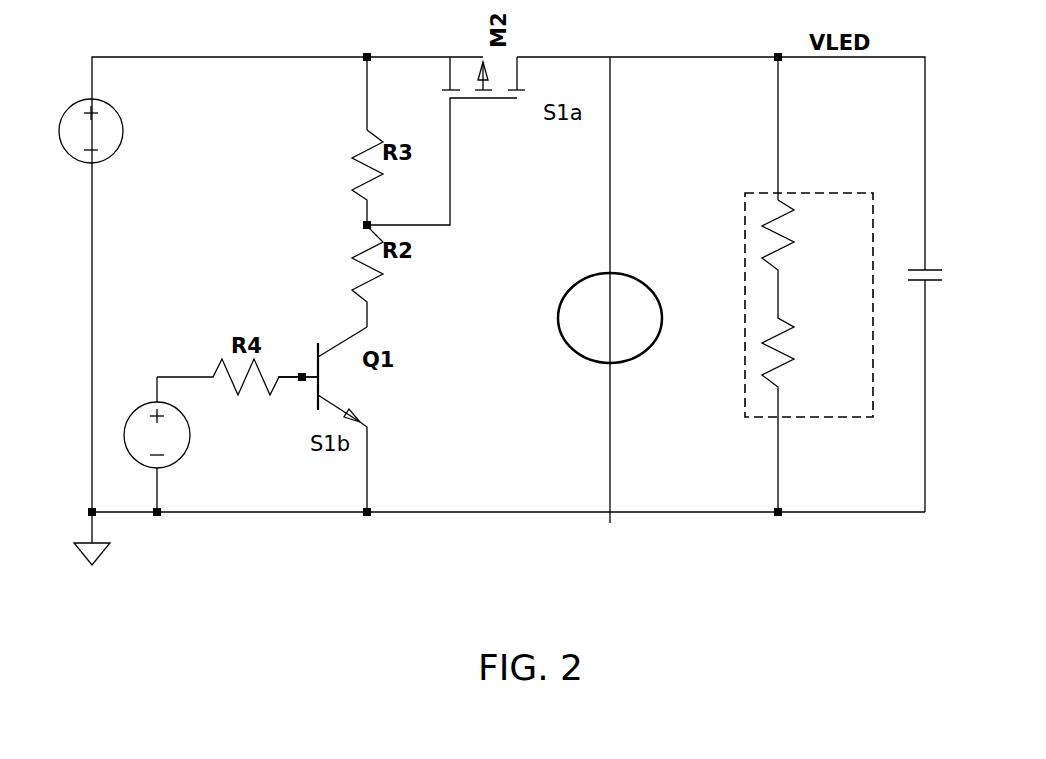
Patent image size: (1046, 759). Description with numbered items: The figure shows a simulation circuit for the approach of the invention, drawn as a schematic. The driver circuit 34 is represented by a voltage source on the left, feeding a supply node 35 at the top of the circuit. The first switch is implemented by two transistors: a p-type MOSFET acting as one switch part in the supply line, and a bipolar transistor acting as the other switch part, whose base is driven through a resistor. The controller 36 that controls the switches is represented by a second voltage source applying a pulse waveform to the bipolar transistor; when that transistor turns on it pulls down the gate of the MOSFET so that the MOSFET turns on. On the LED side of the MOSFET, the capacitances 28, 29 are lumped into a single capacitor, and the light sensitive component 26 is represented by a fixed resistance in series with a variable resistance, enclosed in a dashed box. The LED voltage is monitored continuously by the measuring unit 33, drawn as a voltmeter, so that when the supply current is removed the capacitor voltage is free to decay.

The light sensitive component 26 is at (745, 348).
The capacitance 28 is at (905, 205).
The capacitance 29 is at (917, 270).
The measuring unit 33 is at (561, 324).
The driver circuit 34 is at (122, 143).
The supply node 35 is at (367, 57).
The controller 36 is at (146, 406).